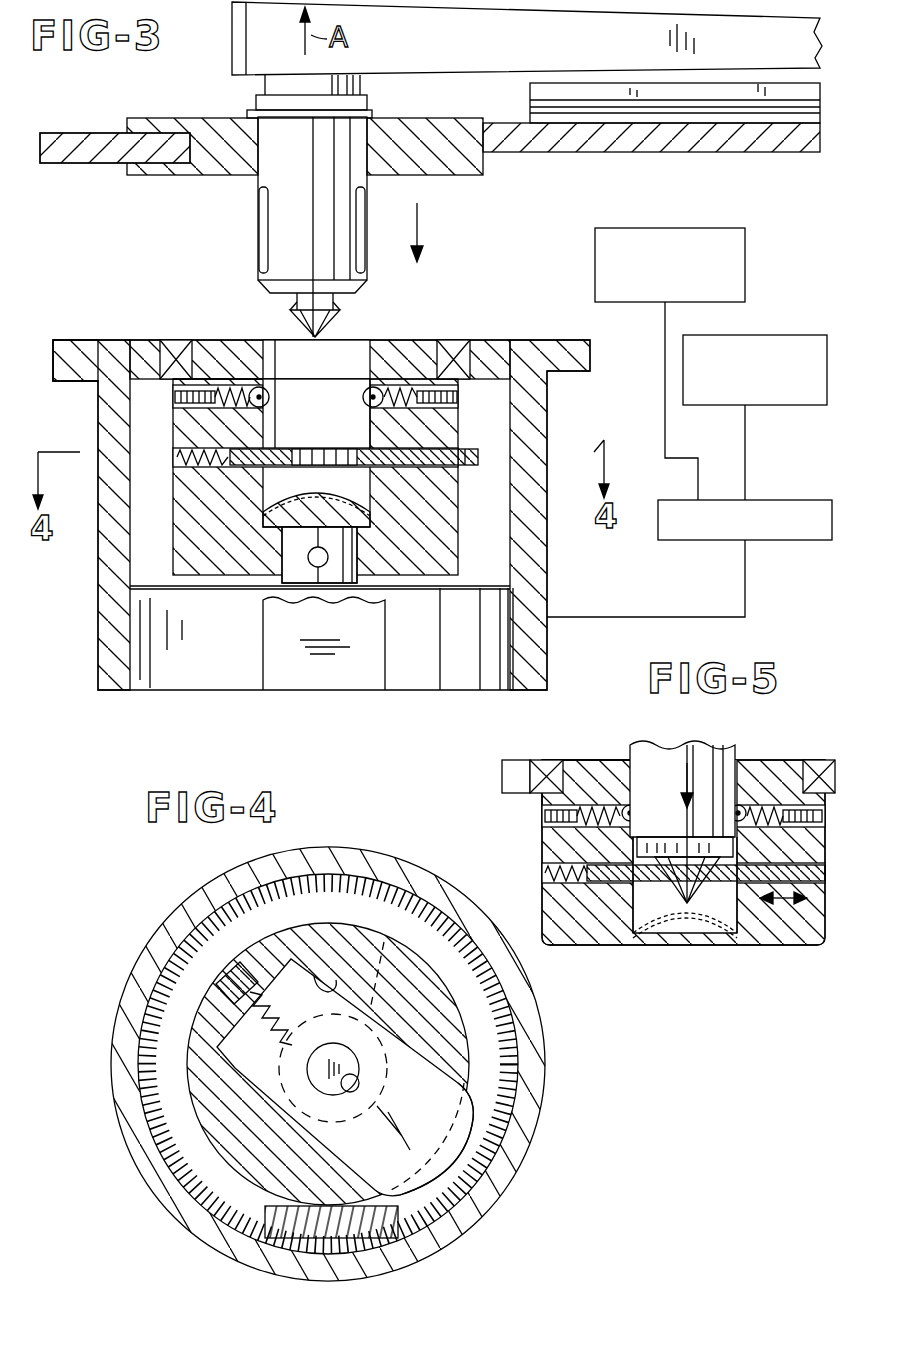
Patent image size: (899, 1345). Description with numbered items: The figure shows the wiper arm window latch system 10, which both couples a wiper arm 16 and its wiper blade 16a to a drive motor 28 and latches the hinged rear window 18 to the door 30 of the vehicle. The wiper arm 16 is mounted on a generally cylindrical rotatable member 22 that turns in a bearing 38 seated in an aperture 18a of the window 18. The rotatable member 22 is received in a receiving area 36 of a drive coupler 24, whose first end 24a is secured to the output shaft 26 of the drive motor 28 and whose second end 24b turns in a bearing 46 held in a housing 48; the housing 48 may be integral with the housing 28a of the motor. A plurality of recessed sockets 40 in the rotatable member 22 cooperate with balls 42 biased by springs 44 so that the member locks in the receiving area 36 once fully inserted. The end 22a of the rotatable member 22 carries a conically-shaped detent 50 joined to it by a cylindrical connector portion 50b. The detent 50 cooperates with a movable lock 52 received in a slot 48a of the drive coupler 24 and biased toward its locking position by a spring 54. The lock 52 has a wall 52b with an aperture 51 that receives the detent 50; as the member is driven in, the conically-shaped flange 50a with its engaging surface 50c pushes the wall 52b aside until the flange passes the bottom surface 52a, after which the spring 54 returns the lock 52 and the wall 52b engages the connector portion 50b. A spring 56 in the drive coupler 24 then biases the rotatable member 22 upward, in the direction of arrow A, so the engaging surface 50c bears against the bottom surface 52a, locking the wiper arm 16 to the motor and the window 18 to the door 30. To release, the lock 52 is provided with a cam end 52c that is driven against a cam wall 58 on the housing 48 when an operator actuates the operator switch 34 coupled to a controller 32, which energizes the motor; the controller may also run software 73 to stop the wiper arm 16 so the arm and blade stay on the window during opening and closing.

In FIG. 3, the wiper arm window latch system 10 is at (197, 264).
In FIG. 5, the wiper arm window latch system 10 is at (611, 738).
In FIG. 3, the wiper arm 16 is at (512, 55).
In FIG. 3, the wiper blade 16a is at (744, 92).
In FIG. 3, the rear window 18 is at (663, 152).
In FIG. 3, the aperture 18a is at (445, 162).
In FIG. 3, the rotatable member 22 is at (297, 163).
In FIG. 5, the rotatable member 22 is at (653, 743).
In FIG. 3, the end of rotatable member 22a is at (358, 273).
In FIG. 3, the drive coupler 24 is at (460, 483).
In FIG. 5, the drive coupler 24 is at (843, 810).
In FIG. 4, the drive coupler 24 is at (216, 1131).
In FIG. 3, the first end of drive coupler 24a is at (197, 564).
In FIG. 3, the second end of drive coupler 24b is at (190, 352).
In FIG. 5, the second end of drive coupler 24b is at (783, 760).
In FIG. 3, the output shaft 26 is at (378, 576).
In FIG. 3, the drive motor 28 is at (427, 675).
In FIG. 3, the housing of drive motor 28a is at (167, 690).
In FIG. 3, the door 30 is at (62, 340).
In FIG. 3, the controller 32 is at (795, 540).
In FIG. 3, the operator switch 34 is at (790, 405).
In FIG. 3, the receiving area 36 is at (252, 365).
In FIG. 5, the receiving area 36 is at (723, 898).
In FIG. 3, the bearing 38 is at (401, 110).
In FIG. 3, the recessed sockets 40 is at (356, 211).
In FIG. 5, the recessed sockets 40 is at (737, 760).
In FIG. 3, the balls 42 is at (364, 396).
In FIG. 5, the balls 42 is at (633, 806).
In FIG. 3, the springs 44 is at (205, 412).
In FIG. 5, the springs 44 is at (597, 807).
In FIG. 3, the bearing 46 is at (465, 336).
In FIG. 5, the bearing 46 is at (543, 760).
In FIG. 3, the housing 48 is at (487, 363).
In FIG. 5, the housing 48 is at (502, 784).
In FIG. 4, the housing 48 is at (153, 943).
In FIG. 3, the slot 48a is at (370, 416).
In FIG. 4, the slot 48a is at (324, 984).
In FIG. 3, the detent 50 is at (302, 329).
In FIG. 5, the detent 50 is at (700, 937).
In FIG. 3, the flange 50a is at (294, 297).
In FIG. 3, the cylindrical connector portion 50b is at (300, 292).
In FIG. 5, the cylindrical connector portion 50b is at (683, 857).
In FIG. 3, the engaging surface 50c is at (348, 302).
In FIG. 4, the aperture 51 is at (335, 1096).
In FIG. 3, the lock 52 is at (477, 443).
In FIG. 5, the lock 52 is at (812, 884).
In FIG. 4, the lock 52 is at (446, 1067).
In FIG. 3, the bottom surface 52a is at (298, 470).
In FIG. 3, the wall 52b is at (370, 480).
In FIG. 4, the wall 52b is at (359, 1084).
In FIG. 3, the cam end 52c is at (480, 455).
In FIG. 5, the cam end 52c is at (843, 845).
In FIG. 4, the cam end 52c is at (496, 1143).
In FIG. 3, the spring 54 is at (183, 467).
In FIG. 5, the spring 54 is at (545, 878).
In FIG. 4, the spring 54 is at (247, 980).
In FIG. 3, the spring 56 is at (382, 520).
In FIG. 5, the spring 56 is at (665, 940).
In FIG. 4, the spring 56 is at (388, 952).
In FIG. 3, the cam wall 58 is at (322, 690).
In FIG. 4, the cam wall 58 is at (333, 1227).
In FIG. 3, the software 73 is at (747, 265).